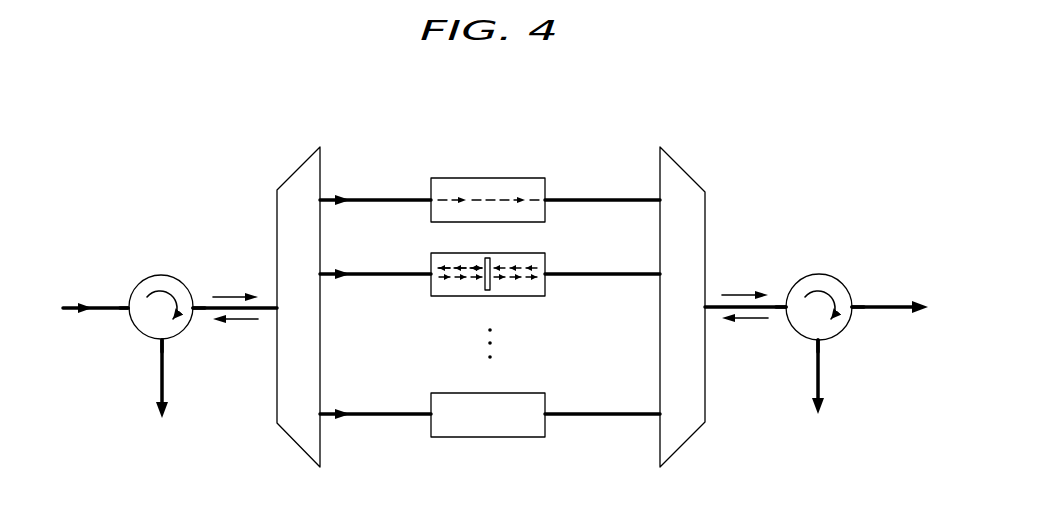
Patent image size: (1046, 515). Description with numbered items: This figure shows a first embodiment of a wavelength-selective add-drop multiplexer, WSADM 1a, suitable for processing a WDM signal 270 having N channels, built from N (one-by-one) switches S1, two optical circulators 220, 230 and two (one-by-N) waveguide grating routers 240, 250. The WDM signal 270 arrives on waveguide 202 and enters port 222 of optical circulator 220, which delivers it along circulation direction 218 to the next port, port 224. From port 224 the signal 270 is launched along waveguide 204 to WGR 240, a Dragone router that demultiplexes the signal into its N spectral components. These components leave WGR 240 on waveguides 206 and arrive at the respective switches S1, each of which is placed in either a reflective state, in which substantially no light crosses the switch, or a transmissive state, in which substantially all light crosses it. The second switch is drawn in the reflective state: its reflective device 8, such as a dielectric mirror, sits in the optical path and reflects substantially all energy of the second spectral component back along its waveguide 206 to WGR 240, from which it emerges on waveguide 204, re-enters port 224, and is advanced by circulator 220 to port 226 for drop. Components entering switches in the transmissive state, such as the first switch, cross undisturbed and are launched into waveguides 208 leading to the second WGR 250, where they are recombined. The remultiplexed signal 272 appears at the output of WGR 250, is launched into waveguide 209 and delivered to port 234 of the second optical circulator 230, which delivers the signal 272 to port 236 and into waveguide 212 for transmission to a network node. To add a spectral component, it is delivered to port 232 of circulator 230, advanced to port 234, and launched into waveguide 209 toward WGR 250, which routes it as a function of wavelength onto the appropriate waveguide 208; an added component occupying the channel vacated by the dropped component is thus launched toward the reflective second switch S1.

The wavelength-selective add-drop multiplexer 1a is at (622, 82).
The reflective device 8 is at (484, 258).
The waveguide 202 is at (106, 312).
The waveguide 204 is at (276, 300).
The waveguides 206 is at (404, 412).
The waveguides 208 is at (576, 198).
The waveguide 209 is at (711, 298).
The waveguide 212 is at (892, 312).
The circulation direction 218 is at (172, 288).
The optical circulator 220 is at (159, 275).
The port 222 is at (128, 290).
The port 224 is at (191, 329).
The port 226 is at (154, 341).
The optical circulator 230 is at (814, 275).
The port 232 is at (816, 344).
The port 234 is at (786, 300).
The port 236 is at (853, 298).
The waveguide grating router 240 is at (316, 319).
The waveguide grating router 250 is at (698, 317).
The WDM signal 270 is at (81, 303).
The remultiplexed signal 272 is at (245, 323).
The (1×1) switches S1 is at (482, 177).